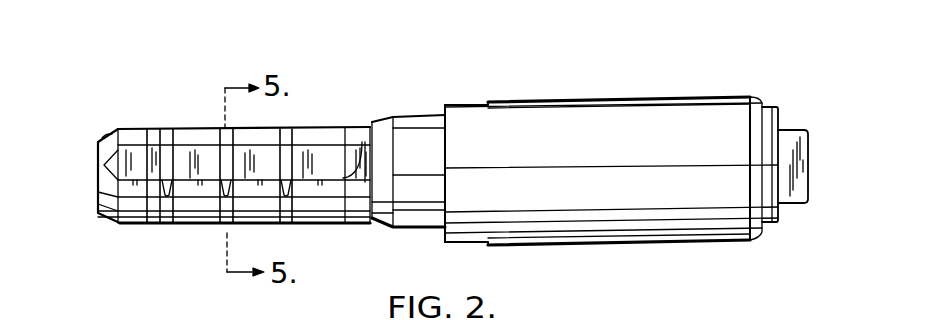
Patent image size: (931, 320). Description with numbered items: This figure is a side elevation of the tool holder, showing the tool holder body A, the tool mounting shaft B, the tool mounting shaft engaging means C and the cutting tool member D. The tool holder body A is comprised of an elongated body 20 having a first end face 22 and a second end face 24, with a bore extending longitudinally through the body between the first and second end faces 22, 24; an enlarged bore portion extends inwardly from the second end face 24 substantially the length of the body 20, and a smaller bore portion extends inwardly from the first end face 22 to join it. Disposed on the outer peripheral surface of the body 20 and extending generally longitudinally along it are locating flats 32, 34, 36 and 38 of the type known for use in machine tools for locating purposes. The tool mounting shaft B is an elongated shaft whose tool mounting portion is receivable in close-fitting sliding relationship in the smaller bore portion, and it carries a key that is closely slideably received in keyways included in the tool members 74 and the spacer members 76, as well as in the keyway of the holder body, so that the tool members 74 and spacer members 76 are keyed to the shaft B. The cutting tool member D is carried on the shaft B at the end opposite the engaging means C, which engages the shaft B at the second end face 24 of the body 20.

The elongated body 20 is at (675, 113).
The first end face 22 is at (347, 127).
The second end face 24 is at (767, 102).
The locating flat 32 is at (645, 101).
The locating flat 34 is at (598, 243).
The locating flat 36 is at (462, 104).
The locating flat 38 is at (473, 243).
The tool member 74 is at (223, 127).
The spacer member 76 is at (319, 126).
The tool holder body A is at (570, 88).
The tool mounting shaft B is at (92, 192).
The tool mounting shaft engaging means C is at (810, 173).
The cutting tool member D is at (220, 228).